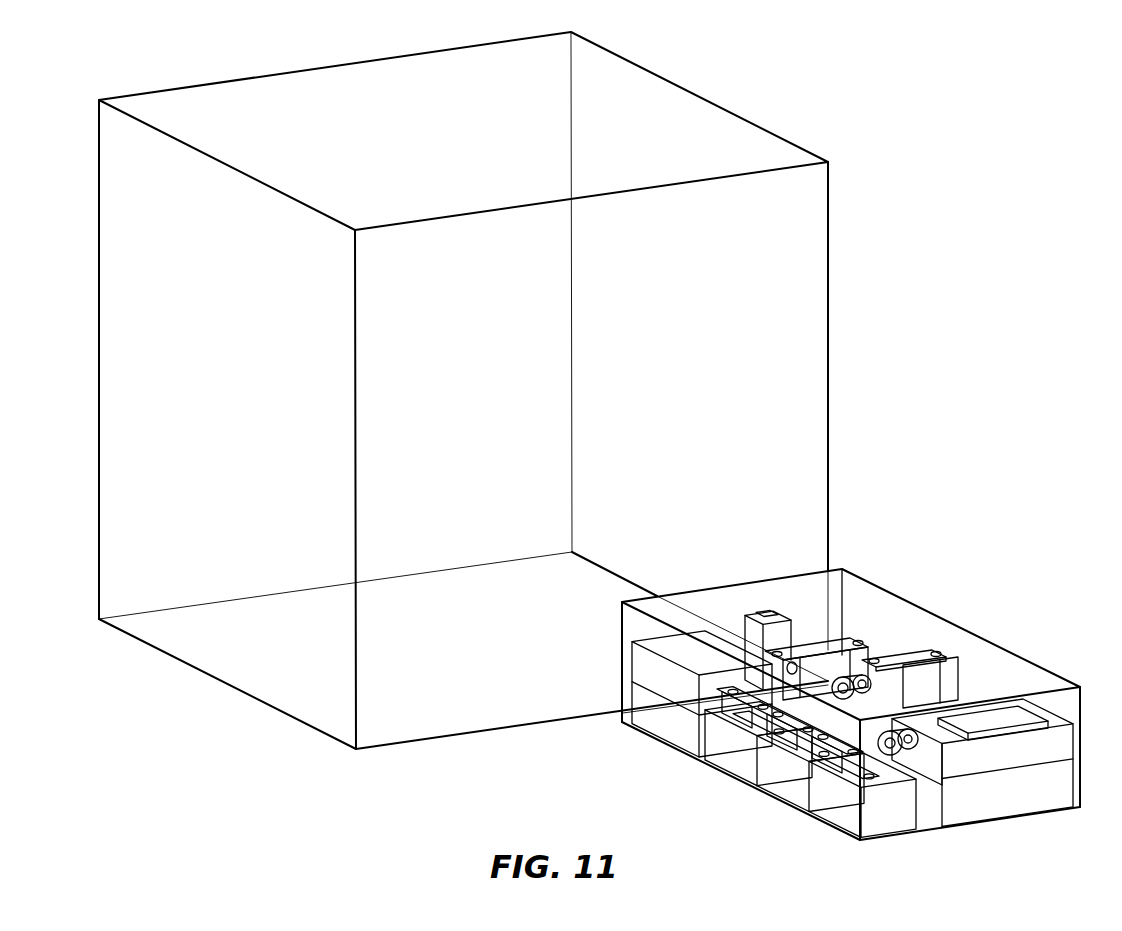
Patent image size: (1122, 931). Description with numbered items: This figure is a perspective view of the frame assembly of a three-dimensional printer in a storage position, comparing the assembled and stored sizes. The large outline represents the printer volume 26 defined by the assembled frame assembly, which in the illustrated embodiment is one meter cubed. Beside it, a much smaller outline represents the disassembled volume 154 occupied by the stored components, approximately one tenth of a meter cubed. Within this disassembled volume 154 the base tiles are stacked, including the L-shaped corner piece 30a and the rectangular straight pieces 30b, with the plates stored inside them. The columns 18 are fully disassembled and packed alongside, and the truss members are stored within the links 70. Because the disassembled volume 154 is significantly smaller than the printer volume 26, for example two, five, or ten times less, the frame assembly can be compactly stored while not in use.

The printer volume 26 is at (273, 100).
The disassembled volume 154 is at (897, 628).
The column 18 is at (803, 637).
The link 70 is at (790, 717).
The straight piece 30b is at (733, 758).
The corner piece 30a is at (1022, 757).